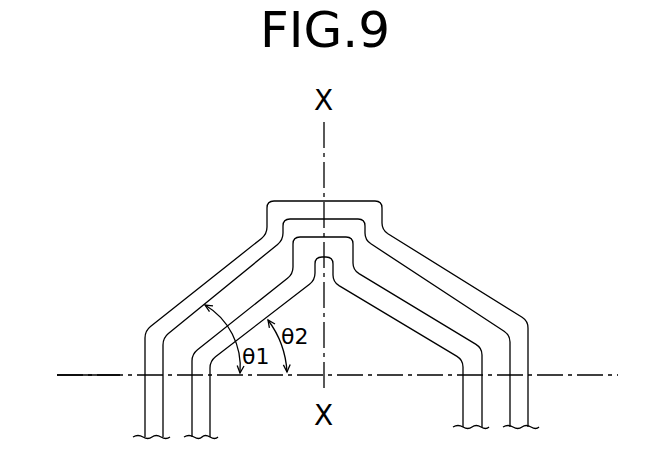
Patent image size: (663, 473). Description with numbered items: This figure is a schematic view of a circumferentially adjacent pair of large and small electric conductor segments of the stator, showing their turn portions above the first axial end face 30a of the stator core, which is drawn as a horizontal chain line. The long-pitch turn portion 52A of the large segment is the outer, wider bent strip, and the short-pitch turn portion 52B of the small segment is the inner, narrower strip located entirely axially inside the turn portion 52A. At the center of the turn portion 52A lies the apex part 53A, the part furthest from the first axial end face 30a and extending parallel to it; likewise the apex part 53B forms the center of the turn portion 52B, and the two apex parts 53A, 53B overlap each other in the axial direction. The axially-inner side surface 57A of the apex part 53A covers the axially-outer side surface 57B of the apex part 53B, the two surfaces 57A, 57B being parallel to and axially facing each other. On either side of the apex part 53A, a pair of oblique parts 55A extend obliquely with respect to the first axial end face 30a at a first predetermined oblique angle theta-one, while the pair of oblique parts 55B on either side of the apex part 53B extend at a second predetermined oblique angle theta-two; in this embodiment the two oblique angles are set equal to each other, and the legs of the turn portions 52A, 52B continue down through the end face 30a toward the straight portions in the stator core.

The oblique parts 55A is at (182, 312).
The oblique parts 55B is at (250, 322).
The apex part 53A is at (308, 210).
The apex part 53B is at (312, 247).
The axially-inner side surface 57A is at (347, 217).
The axially-outer side surface 57B is at (333, 238).
The turn portion 52A is at (435, 262).
The turn portion 52B is at (438, 322).
The first axial end face 30a is at (82, 375).